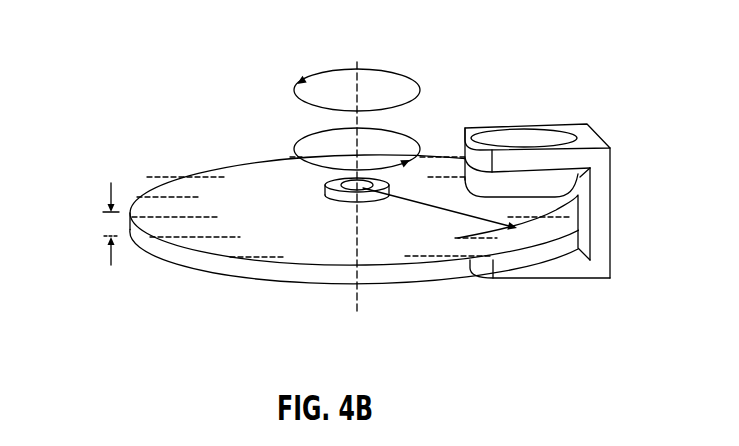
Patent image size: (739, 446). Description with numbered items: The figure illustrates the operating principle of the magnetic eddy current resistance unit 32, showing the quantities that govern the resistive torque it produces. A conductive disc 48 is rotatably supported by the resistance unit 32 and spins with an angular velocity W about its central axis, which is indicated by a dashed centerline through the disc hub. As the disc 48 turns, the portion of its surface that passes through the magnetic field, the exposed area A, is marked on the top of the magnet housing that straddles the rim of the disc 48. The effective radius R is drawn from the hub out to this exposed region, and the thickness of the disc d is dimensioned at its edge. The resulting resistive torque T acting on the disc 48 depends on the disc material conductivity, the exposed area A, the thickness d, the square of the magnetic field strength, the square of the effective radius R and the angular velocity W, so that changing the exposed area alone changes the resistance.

The resistance unit 32 is at (450, 85).
The disc 48 is at (262, 271).
The resistive torque T is at (344, 90).
The angular velocity of the disc rotation W is at (370, 143).
The area of the disc exposed to the magnetic field A is at (524, 119).
The effective radius of the disc R is at (440, 215).
The thickness of the disc d is at (110, 184).